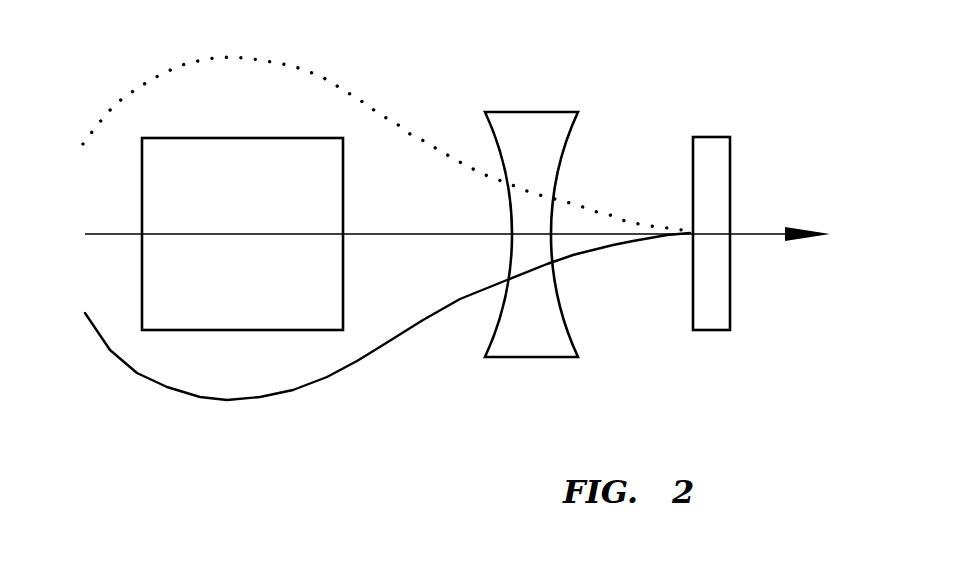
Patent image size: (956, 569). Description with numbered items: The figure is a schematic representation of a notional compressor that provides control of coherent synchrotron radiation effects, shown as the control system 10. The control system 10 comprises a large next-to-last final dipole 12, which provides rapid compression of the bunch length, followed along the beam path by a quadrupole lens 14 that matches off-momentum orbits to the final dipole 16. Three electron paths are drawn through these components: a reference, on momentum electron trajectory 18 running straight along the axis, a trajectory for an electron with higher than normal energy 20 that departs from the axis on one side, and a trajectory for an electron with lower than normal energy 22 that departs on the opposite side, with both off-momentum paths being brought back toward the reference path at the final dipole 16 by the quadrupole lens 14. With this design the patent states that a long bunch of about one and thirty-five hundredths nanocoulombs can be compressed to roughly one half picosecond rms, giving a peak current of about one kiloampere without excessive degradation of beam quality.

The control system 10 is at (186, 418).
The next-to-last final dipole 12 is at (278, 143).
The quadrupole lens 14 is at (552, 333).
The final dipole 16 is at (725, 302).
The on momentum electron trajectory 18 is at (475, 236).
The trajectory for an electron with higher than normal energy 20 is at (370, 108).
The trajectory for an electron with lower than normal energy 22 is at (385, 344).